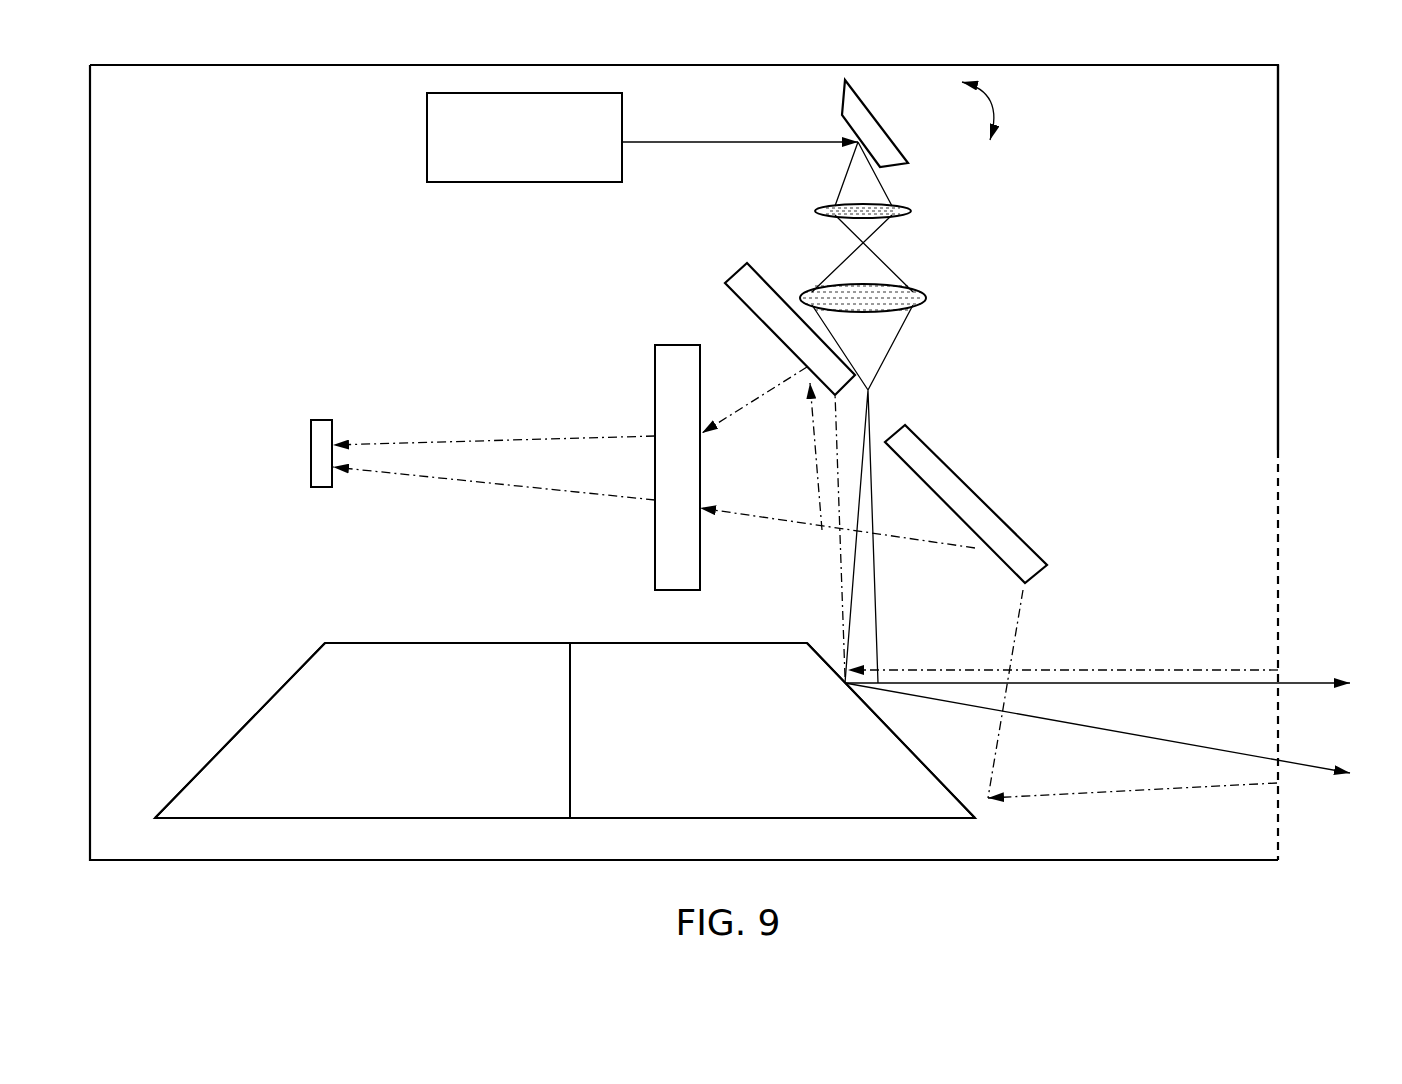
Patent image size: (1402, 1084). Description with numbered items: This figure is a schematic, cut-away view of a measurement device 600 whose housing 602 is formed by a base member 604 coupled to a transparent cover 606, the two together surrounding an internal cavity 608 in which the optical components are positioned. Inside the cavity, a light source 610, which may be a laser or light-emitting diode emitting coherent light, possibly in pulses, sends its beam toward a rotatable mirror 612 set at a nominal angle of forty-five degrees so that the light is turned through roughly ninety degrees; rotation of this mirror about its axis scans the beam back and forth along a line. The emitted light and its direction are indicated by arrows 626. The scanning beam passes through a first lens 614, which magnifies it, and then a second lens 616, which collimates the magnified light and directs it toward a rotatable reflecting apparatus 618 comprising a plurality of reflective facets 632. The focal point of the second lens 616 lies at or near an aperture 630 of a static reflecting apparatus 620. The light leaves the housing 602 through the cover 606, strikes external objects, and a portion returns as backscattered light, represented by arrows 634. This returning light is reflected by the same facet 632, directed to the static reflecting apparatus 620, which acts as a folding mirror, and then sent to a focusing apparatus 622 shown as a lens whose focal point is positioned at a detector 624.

The measurement device 600 is at (83, 158).
The housing 602 is at (1345, 418).
The base member 604 is at (1278, 450).
The transparent cover 606 is at (1278, 490).
The internal cavity 608 is at (212, 137).
The light source 610 is at (509, 152).
The rotatable mirror 612 is at (870, 117).
The first lens 614 is at (908, 206).
The second lens 616 is at (923, 299).
The rotatable reflecting apparatus 618 is at (450, 643).
The static reflecting apparatus 620 is at (948, 485).
The focusing apparatus 622 is at (674, 345).
The detector 624 is at (318, 420).
The emitted light 626 is at (731, 142).
The aperture 630 is at (895, 432).
The facet 632 is at (248, 720).
The backscattered light 634 is at (470, 443).